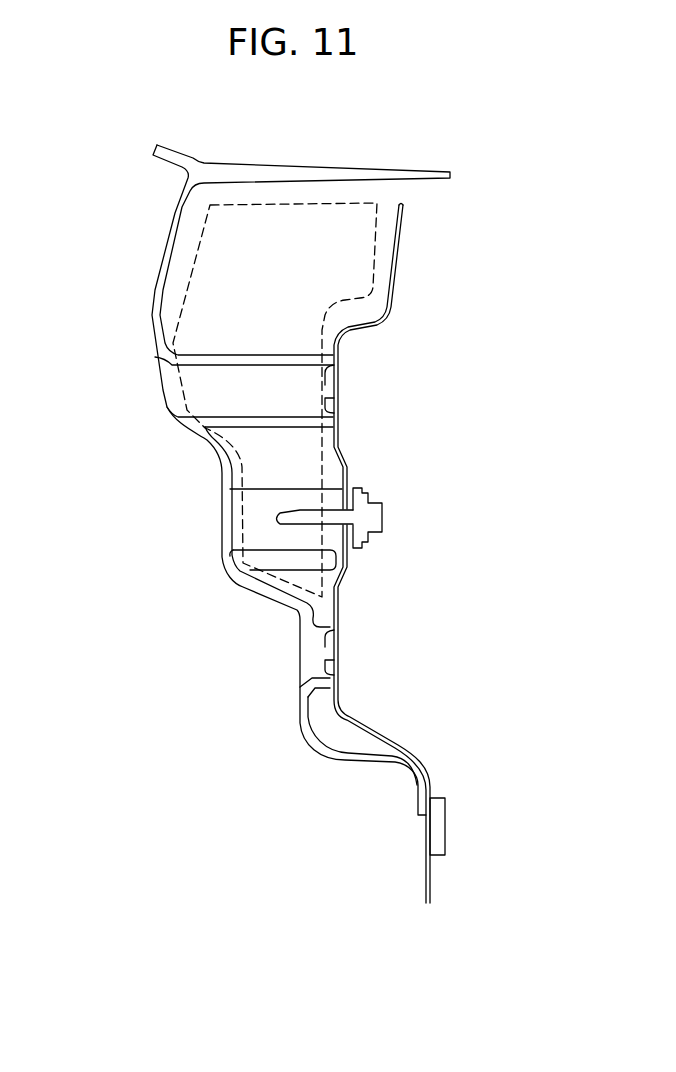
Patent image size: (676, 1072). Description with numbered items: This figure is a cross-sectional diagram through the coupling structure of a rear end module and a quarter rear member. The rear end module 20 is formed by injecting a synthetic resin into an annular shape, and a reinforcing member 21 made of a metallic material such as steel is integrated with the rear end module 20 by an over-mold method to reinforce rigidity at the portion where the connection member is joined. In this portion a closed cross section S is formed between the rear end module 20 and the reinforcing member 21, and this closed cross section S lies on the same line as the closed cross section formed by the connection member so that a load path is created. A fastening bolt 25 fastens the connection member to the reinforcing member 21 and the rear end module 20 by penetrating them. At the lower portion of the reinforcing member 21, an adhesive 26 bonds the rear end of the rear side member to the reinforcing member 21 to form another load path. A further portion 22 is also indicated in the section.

The rear end module 20 is at (217, 463).
The reinforcing member 21 is at (373, 317).
The rib portion 22 is at (255, 381).
The fastening bolt 25 is at (377, 518).
The adhesive 26 is at (445, 827).
The closed cross section S is at (375, 243).